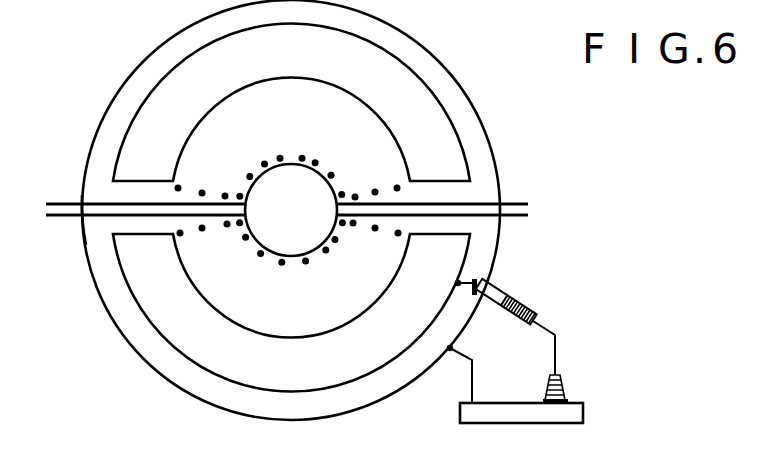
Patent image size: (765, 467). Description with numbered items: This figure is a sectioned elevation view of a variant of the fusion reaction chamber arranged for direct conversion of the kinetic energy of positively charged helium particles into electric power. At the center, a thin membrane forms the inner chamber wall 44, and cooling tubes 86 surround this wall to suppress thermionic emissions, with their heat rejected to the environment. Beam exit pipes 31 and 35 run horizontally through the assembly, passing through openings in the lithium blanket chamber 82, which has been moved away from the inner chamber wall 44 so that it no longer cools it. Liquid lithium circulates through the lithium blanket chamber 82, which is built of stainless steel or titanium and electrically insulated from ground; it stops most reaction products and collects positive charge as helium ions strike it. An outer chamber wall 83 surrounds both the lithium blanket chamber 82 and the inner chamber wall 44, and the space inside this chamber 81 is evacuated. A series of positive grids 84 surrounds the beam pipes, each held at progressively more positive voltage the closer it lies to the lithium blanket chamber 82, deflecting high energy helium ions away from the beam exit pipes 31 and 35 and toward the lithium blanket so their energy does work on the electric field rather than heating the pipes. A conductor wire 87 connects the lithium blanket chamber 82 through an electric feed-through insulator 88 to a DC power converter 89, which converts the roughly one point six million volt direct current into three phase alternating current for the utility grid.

The outer chamber wall 83 is at (129, 76).
The lithium blanket chamber 82 is at (133, 120).
The chamber space 81 is at (110, 223).
The beam exit pipe 31 is at (100, 203).
The beam exit pipe 35 is at (475, 204).
The inner chamber wall 44 is at (312, 158).
The cooling tubes 86 is at (333, 173).
The positive grids 84 is at (230, 188).
The conductor wire 87 is at (466, 278).
The electric feed-through insulator 88 is at (523, 298).
The DC power converter 89 is at (494, 403).